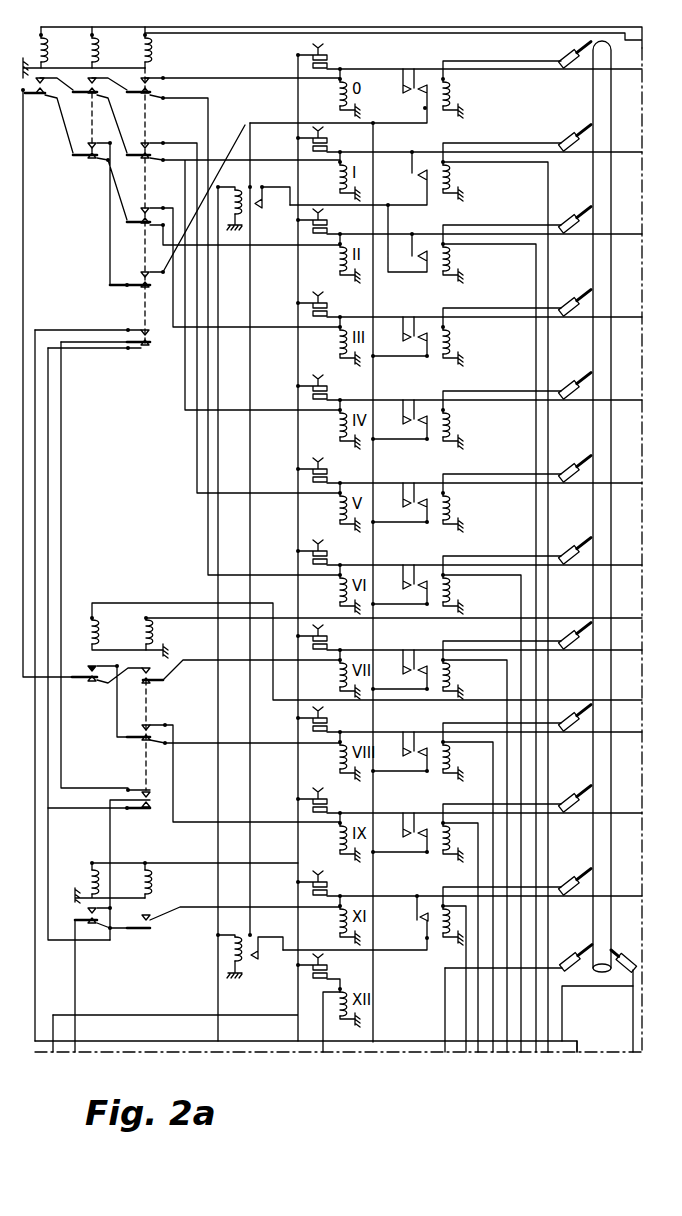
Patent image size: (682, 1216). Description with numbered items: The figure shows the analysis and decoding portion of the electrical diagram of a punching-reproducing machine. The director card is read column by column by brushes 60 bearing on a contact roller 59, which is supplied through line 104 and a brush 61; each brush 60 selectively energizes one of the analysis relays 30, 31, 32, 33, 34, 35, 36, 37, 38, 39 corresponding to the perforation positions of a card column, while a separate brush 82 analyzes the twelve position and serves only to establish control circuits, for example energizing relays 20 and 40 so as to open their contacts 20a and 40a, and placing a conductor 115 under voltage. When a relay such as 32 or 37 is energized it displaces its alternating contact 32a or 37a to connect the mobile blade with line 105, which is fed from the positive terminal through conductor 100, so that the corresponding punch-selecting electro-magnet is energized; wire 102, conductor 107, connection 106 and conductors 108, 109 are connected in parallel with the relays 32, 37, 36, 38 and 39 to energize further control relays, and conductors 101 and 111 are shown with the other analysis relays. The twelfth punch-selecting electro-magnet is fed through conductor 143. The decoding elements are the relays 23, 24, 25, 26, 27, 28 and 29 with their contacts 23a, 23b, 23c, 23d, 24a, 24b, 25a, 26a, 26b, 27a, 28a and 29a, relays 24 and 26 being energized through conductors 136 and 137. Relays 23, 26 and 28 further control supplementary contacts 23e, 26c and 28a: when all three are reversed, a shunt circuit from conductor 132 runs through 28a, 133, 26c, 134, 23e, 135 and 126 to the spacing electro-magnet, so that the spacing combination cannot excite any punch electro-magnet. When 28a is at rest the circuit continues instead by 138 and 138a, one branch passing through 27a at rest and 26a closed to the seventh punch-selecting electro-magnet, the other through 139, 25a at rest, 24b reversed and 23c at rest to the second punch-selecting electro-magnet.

The relay 20 is at (233, 188).
The contact of relay 20 20a is at (260, 214).
The decoding relay 23 is at (150, 42).
The contact of relay 23 23a is at (144, 95).
The contact of relay 23 23b is at (144, 161).
The contact of relay 23 23c is at (137, 228).
The contact of relay 23 23d is at (140, 279).
The supplementary alternating contact of relay 23 23e is at (152, 338).
The decoding relay 24 is at (97, 42).
The contact of relay 24 24a is at (91, 95).
The contact of relay 24 24b is at (91, 161).
The decoding relay 25 is at (46, 42).
The contact of relay 25 25a is at (38, 95).
The decoding relay 26 is at (152, 630).
The contact of relay 26 26a is at (139, 678).
The contact of relay 26 26b is at (139, 733).
The supplementary alternating contact of relay 26 26c is at (148, 810).
The decoding relay 27 is at (98, 630).
The contact of relay 27 27a is at (84, 682).
The decoding relay 28 is at (88, 870).
The contact of relay 28 28a is at (86, 916).
The decoding relay 29 is at (152, 882).
The contact of relay 29 29a is at (155, 929).
The analysis relay 30 is at (452, 91).
The analysis relay 31 is at (452, 176).
The analysis relay 32 is at (452, 258).
The alternating contact of relay 32 32a is at (414, 274).
The analysis relay 33 is at (452, 341).
The analysis relay 34 is at (452, 424).
The analysis relay 35 is at (452, 507).
The analysis relay 36 is at (452, 589).
The analysis relay 37 is at (452, 674).
The alternating contact of relay 37 37a is at (410, 676).
The analysis relay 38 is at (452, 756).
The analysis relay 39 is at (452, 837).
The relay 40 is at (239, 939).
The contact of relay 40 40a is at (257, 966).
The contact roller 59 is at (611, 920).
The brushes 60 is at (584, 60).
The brush 61 is at (626, 960).
The brush 82 is at (574, 959).
The conductor 100 is at (296, 106).
The conductor 101 is at (515, 164).
The wire 102 is at (503, 246).
The line 104 is at (632, 1014).
The line 105 is at (250, 146).
The connection 106 is at (519, 614).
The conductor 107 is at (506, 699).
The conductor 108 is at (492, 801).
The conductor 109 is at (478, 878).
The conductor 111 is at (448, 1000).
The conductor 115 is at (218, 716).
The conductor 126 is at (587, 1043).
The conductor 132 is at (75, 992).
The conductor 133 is at (110, 849).
The conductor 134 is at (61, 548).
The conductor 135 is at (76, 330).
The conductor 136 is at (226, 36).
The conductor 137 is at (198, 622).
The conductor 138 is at (49, 828).
The conductor 138a is at (50, 748).
The conductor 139 is at (23, 270).
The conductor 143 is at (323, 1040).